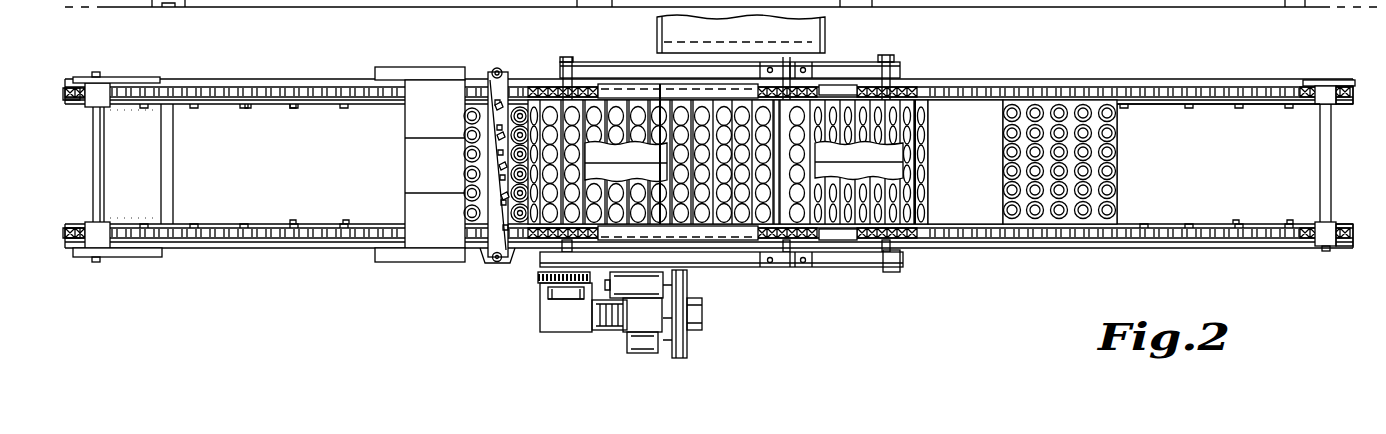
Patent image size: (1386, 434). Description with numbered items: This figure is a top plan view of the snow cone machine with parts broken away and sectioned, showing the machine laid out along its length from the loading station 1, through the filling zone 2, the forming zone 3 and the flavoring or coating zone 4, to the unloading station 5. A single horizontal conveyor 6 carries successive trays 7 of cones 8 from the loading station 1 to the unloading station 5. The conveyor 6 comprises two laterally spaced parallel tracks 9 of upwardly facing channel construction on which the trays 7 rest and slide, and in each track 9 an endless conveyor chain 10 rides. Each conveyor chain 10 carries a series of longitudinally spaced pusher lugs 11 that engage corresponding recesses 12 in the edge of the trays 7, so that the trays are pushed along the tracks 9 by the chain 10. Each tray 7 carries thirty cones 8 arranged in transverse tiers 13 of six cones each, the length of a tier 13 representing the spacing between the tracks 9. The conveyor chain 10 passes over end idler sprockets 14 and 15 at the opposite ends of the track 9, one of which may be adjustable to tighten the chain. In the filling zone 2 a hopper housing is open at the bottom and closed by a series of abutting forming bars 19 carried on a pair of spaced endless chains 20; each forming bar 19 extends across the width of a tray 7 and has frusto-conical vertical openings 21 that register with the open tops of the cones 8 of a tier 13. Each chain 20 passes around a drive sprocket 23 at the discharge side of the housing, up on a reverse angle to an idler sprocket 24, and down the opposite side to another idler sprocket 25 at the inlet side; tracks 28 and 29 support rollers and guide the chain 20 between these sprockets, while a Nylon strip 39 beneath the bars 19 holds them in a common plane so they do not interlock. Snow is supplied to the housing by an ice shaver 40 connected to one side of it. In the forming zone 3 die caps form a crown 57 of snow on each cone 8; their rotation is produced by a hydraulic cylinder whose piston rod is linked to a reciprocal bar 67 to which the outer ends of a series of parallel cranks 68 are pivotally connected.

The loading station 1 is at (1262, 125).
The filling zone 2 is at (848, 274).
The forming zone 3 is at (491, 268).
The flavoring or coating zone 4 is at (440, 164).
The unloading station 5 is at (132, 126).
The conveyor 6 is at (1211, 84).
The tray 7 is at (484, 98).
The cones 8 is at (464, 130).
The tracks 9 is at (1206, 223).
The conveyor chain 10 is at (968, 92).
The pusher lugs 11 is at (292, 106).
The recesses 12 is at (1062, 104).
The tiers 13 is at (1014, 106).
The end idler sprocket 14 is at (1337, 226).
The end idler sprocket 15 is at (78, 102).
The forming bars 19 is at (661, 100).
The endless chains 20 is at (765, 86).
The frusto-conical vertical openings 21 is at (617, 108).
The drive sprocket 23 is at (543, 86).
The idler sprocket 24 is at (800, 90).
The idler sprocket 25 is at (903, 97).
The track 28 is at (708, 88).
The track 29 is at (843, 88).
The Nylon strip 39 is at (648, 167).
The ice shaver 40 is at (788, 40).
The crown 57 is at (464, 211).
The reciprocal bar 67 is at (507, 97).
The cranks 68 is at (487, 176).